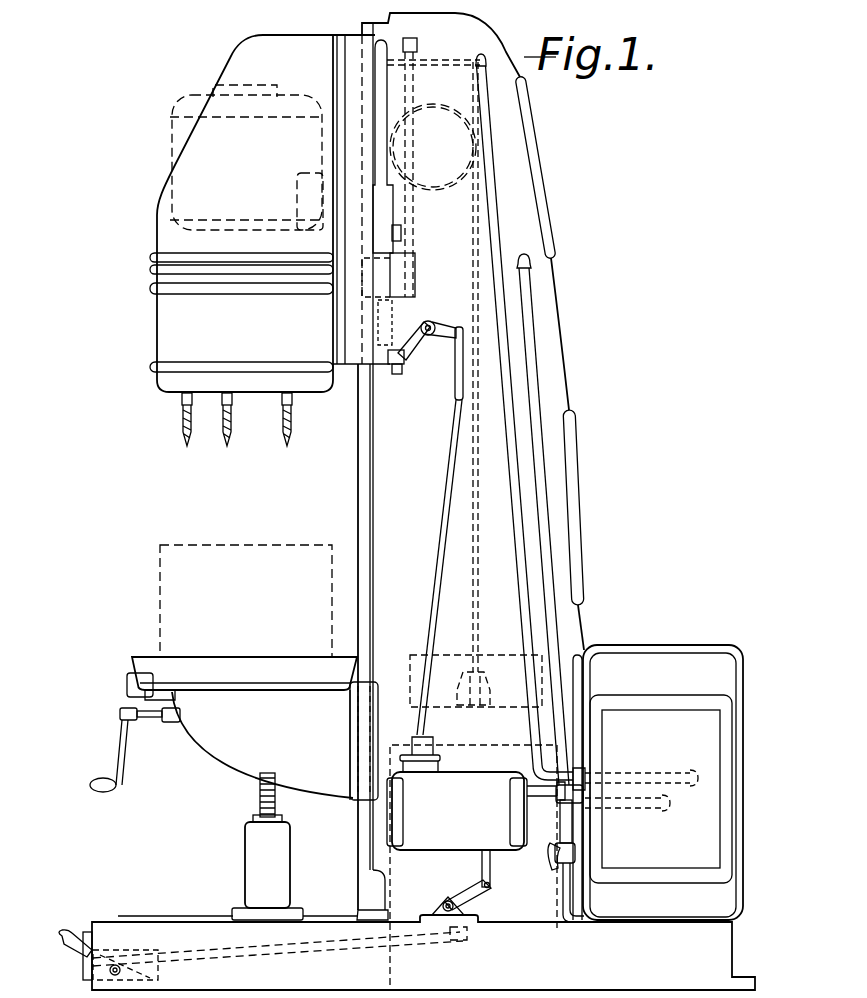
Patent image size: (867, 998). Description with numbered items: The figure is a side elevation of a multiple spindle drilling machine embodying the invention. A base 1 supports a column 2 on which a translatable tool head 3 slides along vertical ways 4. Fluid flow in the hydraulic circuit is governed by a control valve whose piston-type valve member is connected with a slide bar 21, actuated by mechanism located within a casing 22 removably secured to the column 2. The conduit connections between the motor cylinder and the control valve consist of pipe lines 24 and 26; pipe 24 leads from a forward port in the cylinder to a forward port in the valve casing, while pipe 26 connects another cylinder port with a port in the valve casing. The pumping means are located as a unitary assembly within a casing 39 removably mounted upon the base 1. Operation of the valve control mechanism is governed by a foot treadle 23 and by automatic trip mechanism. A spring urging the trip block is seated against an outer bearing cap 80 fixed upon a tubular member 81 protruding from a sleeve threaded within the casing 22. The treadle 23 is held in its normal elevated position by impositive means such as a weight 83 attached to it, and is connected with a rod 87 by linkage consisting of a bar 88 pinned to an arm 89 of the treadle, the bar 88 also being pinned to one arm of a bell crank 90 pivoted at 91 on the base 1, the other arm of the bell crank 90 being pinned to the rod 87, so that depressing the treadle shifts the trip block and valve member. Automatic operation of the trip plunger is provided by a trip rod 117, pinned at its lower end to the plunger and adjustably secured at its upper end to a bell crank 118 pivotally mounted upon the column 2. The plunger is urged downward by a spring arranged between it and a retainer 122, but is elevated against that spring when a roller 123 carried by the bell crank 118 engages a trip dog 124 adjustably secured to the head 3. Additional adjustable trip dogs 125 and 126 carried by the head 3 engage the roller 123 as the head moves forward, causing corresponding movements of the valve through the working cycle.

The base 1 is at (419, 952).
The column 2 is at (470, 499).
The tool head 3 is at (270, 240).
The vertical ways 4 is at (358, 428).
The slide bar 21 is at (580, 782).
The casing 22 is at (470, 773).
The foot treadle 23 is at (87, 936).
The pipe line 24 is at (516, 558).
The pipe line 26 is at (549, 592).
The casing 39 is at (658, 782).
The outer bearing cap 80 is at (570, 815).
The tubular member 81 is at (556, 792).
The weight 83 is at (160, 966).
The rod 87 is at (492, 868).
The bar 88 is at (286, 951).
The arm 89 is at (118, 953).
The bell crank 90 is at (472, 890).
The pivot 91 is at (446, 901).
The trip rod 117 is at (439, 552).
The bell crank 118 is at (445, 327).
The retainer 122 is at (434, 741).
The roller 123 is at (407, 358).
The trip dog 124 is at (400, 356).
The trip dog 125 is at (401, 262).
The trip dog 126 is at (403, 229).